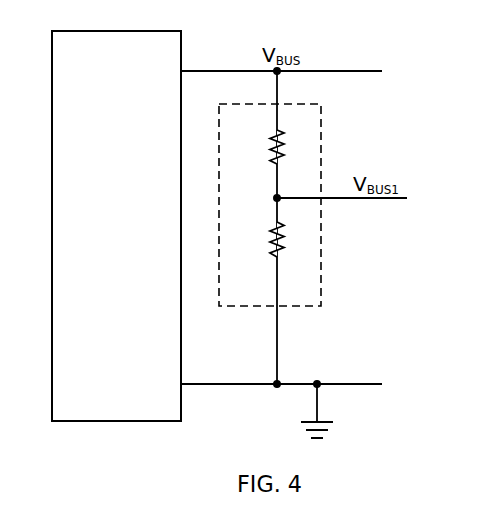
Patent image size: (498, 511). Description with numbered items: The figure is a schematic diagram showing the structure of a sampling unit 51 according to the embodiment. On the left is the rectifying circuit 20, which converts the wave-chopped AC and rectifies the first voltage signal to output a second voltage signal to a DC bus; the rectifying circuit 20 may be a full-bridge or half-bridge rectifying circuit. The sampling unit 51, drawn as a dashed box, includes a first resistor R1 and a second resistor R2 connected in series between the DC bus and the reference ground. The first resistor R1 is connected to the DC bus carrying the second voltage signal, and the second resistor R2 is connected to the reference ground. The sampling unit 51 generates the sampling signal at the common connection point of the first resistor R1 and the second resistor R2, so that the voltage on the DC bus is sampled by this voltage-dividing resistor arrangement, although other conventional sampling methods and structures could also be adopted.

The rectifying circuit 20 is at (107, 263).
The sampling unit 51 is at (270, 230).
The first resistor R1 is at (263, 147).
The second resistor R2 is at (263, 239).